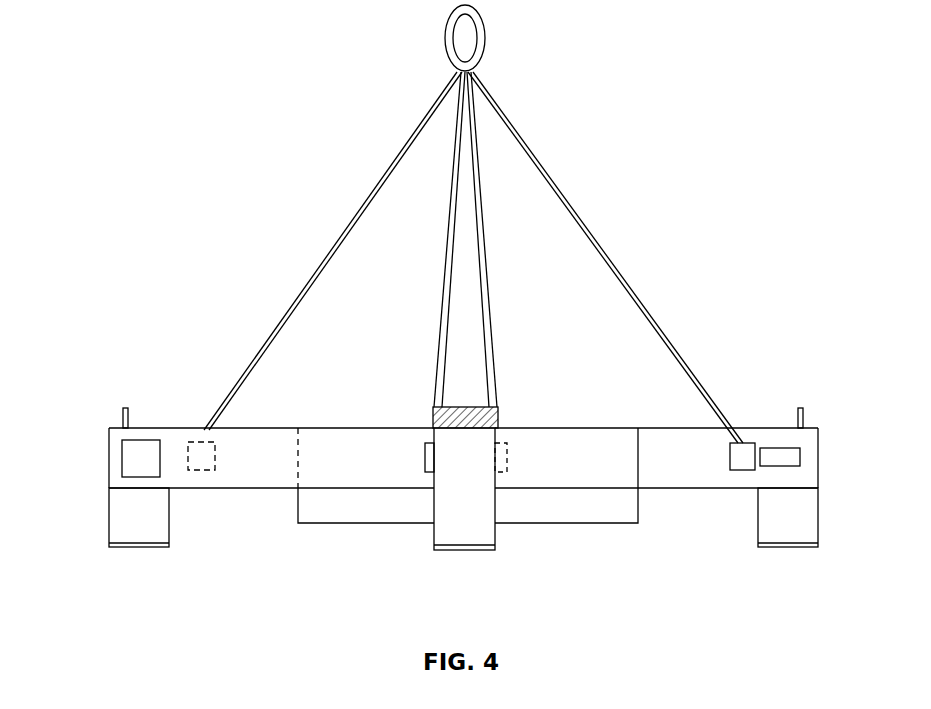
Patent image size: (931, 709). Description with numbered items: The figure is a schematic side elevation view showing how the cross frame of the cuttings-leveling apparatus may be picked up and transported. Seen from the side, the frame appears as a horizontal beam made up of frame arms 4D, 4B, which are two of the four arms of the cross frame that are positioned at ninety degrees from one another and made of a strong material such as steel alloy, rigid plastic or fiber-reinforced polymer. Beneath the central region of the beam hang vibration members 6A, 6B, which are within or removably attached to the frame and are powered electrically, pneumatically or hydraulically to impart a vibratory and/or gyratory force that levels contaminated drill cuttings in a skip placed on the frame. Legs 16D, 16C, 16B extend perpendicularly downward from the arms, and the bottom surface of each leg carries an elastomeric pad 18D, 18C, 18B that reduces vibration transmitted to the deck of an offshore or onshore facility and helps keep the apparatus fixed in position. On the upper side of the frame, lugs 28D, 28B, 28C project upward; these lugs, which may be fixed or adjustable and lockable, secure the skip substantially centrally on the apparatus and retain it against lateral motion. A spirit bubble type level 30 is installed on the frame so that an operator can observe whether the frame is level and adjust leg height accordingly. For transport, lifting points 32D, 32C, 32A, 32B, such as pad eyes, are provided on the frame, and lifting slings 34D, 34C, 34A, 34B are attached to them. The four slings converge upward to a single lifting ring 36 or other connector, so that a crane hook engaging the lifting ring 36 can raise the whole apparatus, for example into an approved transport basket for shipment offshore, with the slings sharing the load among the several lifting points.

The frame arm 4D is at (280, 490).
The frame arm 4B is at (685, 490).
The vibration member 6A is at (330, 525).
The vibration member 6B is at (610, 525).
The leg 16D is at (109, 503).
The leg 16C is at (432, 523).
The leg 16B is at (818, 515).
The elastomeric pad 18D is at (137, 549).
The elastomeric pad 18C is at (455, 552).
The elastomeric pad 18B is at (787, 549).
The lug 28D is at (122, 412).
The lug 28B is at (804, 412).
The lug 28C is at (462, 407).
The lifting point 32D is at (185, 428).
The lifting point 32C is at (425, 456).
The lifting point 32A is at (507, 456).
The lifting point 32B is at (748, 443).
The spirit bubble type level 30 is at (800, 457).
The lifting ring 36 is at (487, 40).
The lifting sling 34D is at (312, 255).
The lifting sling 34B is at (683, 352).
The lifting sling 34C is at (438, 312).
The lifting sling 34A is at (494, 312).